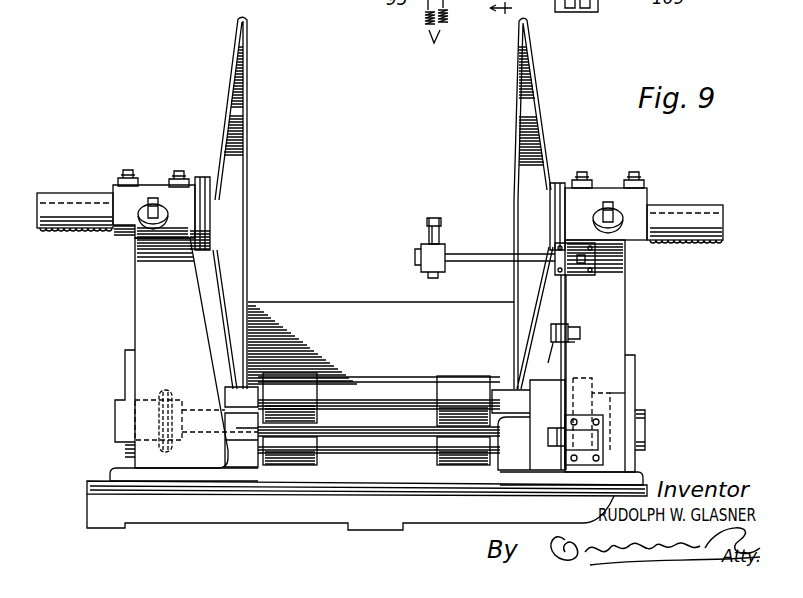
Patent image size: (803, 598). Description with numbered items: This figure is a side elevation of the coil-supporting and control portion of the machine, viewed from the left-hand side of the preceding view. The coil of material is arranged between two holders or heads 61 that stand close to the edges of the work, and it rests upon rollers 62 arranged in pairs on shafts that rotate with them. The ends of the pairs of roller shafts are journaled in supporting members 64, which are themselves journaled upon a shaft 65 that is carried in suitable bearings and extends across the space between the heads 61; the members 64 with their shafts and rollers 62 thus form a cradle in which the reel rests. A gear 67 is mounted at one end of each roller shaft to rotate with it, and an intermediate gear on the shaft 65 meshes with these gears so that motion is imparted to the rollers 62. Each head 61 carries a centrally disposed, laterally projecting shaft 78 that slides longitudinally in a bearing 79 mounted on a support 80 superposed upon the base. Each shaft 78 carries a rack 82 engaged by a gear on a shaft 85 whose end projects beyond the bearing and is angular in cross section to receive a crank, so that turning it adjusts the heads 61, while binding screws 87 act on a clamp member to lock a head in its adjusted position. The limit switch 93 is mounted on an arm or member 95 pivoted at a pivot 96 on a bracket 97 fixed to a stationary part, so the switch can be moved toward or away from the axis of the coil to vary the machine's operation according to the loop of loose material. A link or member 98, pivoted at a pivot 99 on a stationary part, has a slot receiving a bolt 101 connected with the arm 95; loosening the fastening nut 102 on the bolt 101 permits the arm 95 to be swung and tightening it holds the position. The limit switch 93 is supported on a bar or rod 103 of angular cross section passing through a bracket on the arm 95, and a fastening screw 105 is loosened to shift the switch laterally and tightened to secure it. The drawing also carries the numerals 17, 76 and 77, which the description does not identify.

The direction arrow 17 is at (511, 9).
The holders or heads 61 is at (243, 19).
The rollers 62 is at (300, 376).
The supporting members 64 is at (612, 392).
The shaft 65 is at (208, 414).
The gear 67 is at (583, 388).
The gear 76 is at (166, 392).
The pinion 77 is at (172, 402).
The shaft 78 is at (57, 195).
The bearing 79 is at (152, 185).
The support 80 is at (134, 308).
The rack 82 is at (381, 242).
The shaft 85 is at (135, 210).
The binding screws 87 is at (128, 170).
The limit switch 93 is at (432, 238).
The arm or member 95 is at (568, 312).
The pivot 96 is at (562, 447).
The bracket 97 is at (578, 468).
The link or member 98 is at (582, 331).
The pivot 99 is at (435, 31).
The bolt 101 is at (549, 364).
The fastening nut 102 is at (575, 342).
The bar or rod 103 is at (481, 248).
The fastening screw 105 is at (438, 222).